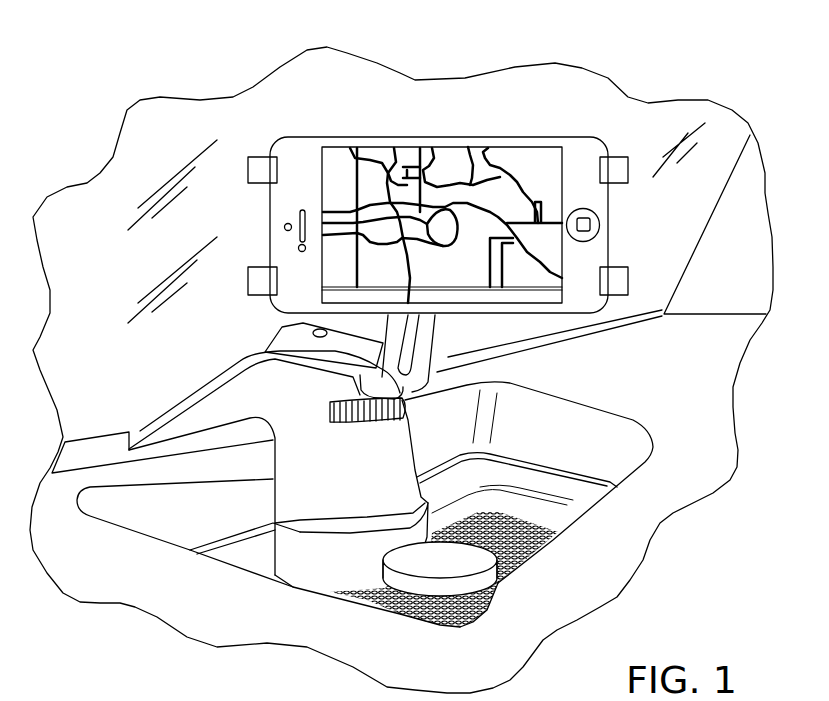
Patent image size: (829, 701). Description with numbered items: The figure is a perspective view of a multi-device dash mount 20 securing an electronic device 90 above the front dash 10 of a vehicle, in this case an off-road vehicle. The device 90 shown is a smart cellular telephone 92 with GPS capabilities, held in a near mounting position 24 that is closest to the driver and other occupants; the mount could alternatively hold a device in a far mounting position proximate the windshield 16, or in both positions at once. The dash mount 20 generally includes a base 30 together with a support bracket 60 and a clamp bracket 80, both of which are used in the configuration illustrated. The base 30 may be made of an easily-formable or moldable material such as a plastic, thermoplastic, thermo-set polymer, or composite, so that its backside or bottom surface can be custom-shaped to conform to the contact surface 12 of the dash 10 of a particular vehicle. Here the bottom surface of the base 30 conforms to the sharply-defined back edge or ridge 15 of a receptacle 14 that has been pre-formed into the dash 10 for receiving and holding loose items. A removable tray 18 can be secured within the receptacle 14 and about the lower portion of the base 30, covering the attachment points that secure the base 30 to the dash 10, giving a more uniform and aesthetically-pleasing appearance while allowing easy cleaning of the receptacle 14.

The dash 10 is at (694, 377).
The contact surface 12 is at (200, 450).
The receptacle 14 is at (601, 440).
The back edge or ridge 15 is at (462, 358).
The windshield 16 is at (118, 277).
The tray 18 is at (560, 502).
The multi-device dash mount 20 is at (192, 378).
The near mounting position 24 is at (623, 241).
The base 30 is at (300, 480).
The support bracket 60 is at (430, 348).
The clamp bracket 80 is at (267, 347).
The device 90 is at (439, 197).
The smart cellular telephone 92 is at (555, 136).